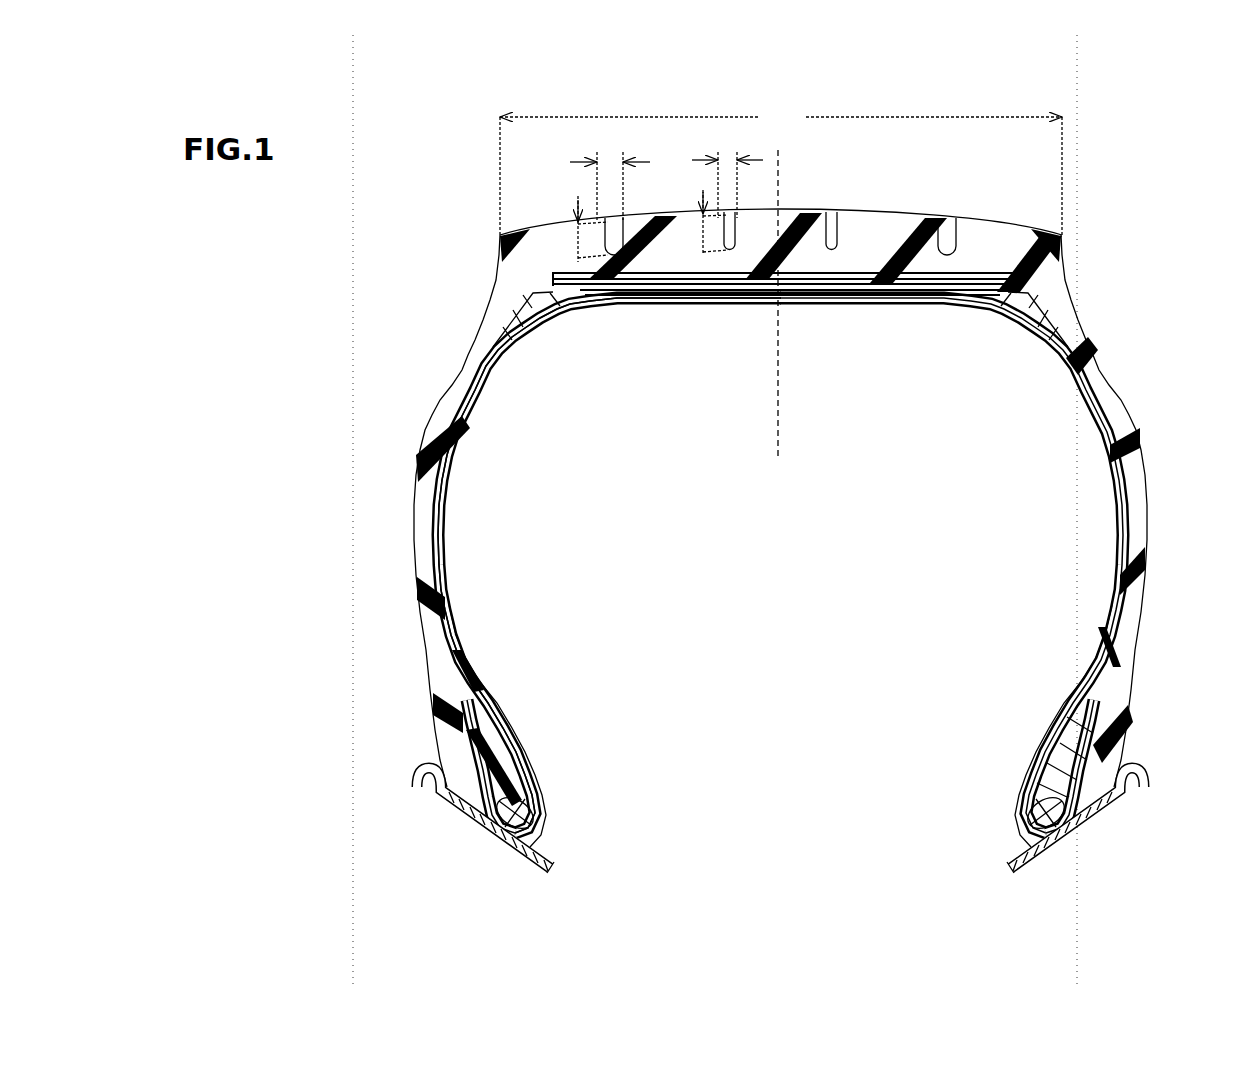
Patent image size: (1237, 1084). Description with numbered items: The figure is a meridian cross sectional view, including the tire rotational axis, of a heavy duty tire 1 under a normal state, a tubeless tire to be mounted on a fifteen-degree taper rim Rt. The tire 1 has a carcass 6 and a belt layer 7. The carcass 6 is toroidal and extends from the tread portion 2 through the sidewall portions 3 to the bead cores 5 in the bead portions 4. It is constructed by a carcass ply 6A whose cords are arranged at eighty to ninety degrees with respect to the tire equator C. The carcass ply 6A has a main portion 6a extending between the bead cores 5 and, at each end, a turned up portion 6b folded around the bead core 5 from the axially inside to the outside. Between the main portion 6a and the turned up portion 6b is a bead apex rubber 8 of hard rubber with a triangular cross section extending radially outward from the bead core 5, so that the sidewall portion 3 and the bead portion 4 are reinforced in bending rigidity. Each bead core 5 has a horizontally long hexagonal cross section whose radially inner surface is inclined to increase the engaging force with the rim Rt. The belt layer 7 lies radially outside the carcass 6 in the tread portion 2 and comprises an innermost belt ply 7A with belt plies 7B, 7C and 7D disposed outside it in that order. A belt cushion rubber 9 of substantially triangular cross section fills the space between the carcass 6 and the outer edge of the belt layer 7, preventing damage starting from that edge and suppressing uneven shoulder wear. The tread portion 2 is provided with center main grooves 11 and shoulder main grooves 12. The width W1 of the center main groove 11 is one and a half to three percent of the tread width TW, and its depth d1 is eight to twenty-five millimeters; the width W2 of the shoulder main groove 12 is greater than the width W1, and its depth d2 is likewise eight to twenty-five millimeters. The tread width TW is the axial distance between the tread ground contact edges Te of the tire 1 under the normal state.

The heavy duty tire 1 is at (819, 209).
The tread portion 2 is at (976, 213).
The sidewall portion 3 is at (411, 411).
The bead portion 4 is at (416, 735).
The bead core 5 is at (528, 817).
The carcass 6 is at (720, 565).
The carcass ply 6A is at (980, 528).
The main portion 6a is at (1123, 543).
The turned up portion 6b is at (1067, 693).
The belt layer 7 is at (786, 352).
The innermost belt ply 7A is at (647, 298).
The belt ply 7B is at (677, 298).
The belt ply 7C is at (710, 296).
The belt ply 7D is at (597, 378).
The bead apex rubber 8 is at (500, 757).
The belt cushion rubber 9 is at (530, 348).
The center main groove 11 is at (731, 232).
The shoulder main groove 12 is at (613, 238).
The tread ground contact edge Te is at (498, 237).
The tread width TW is at (781, 169).
The width of center main groove W1 is at (727, 173).
The width of shoulder main groove W2 is at (610, 175).
The depth of center main groove d1 is at (703, 252).
The depth of shoulder main groove d2 is at (585, 262).
The tire equator C is at (795, 297).
The rim Rt is at (487, 842).